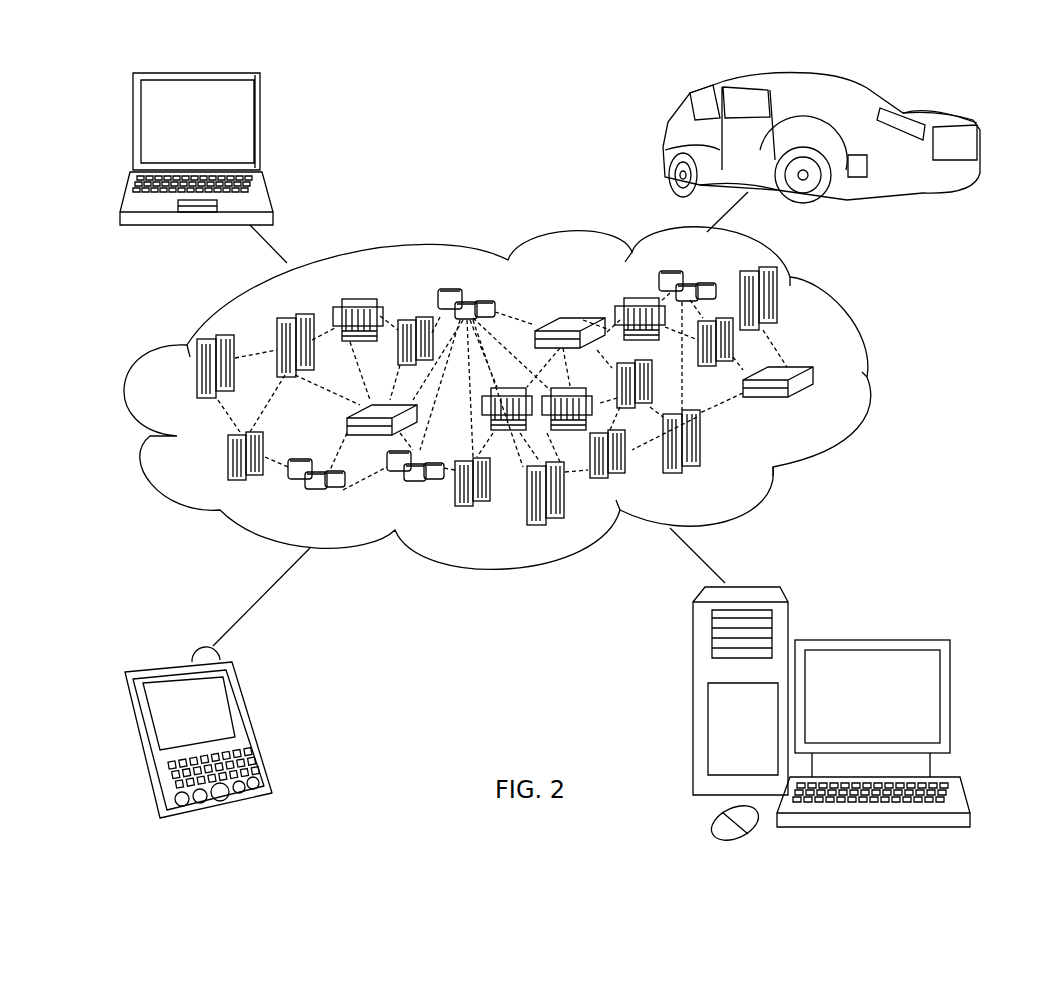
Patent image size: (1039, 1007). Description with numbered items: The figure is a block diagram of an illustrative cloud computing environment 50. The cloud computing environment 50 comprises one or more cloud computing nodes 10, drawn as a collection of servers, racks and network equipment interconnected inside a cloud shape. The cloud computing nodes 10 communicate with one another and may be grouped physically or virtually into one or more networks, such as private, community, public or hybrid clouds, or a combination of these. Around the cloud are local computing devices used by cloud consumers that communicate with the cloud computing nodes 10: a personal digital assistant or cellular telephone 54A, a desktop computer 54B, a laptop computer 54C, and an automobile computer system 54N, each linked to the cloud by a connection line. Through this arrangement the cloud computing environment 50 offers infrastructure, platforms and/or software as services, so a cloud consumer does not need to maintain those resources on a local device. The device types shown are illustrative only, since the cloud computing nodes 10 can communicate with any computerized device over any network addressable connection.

The cloud computing nodes 10 is at (824, 407).
The cloud computing environment 50 is at (868, 378).
The personal digital assistant or cellular telephone 54A is at (248, 725).
The desktop computer 54B is at (870, 637).
The laptop computer 54C is at (262, 132).
The automobile computer system 54N is at (668, 150).